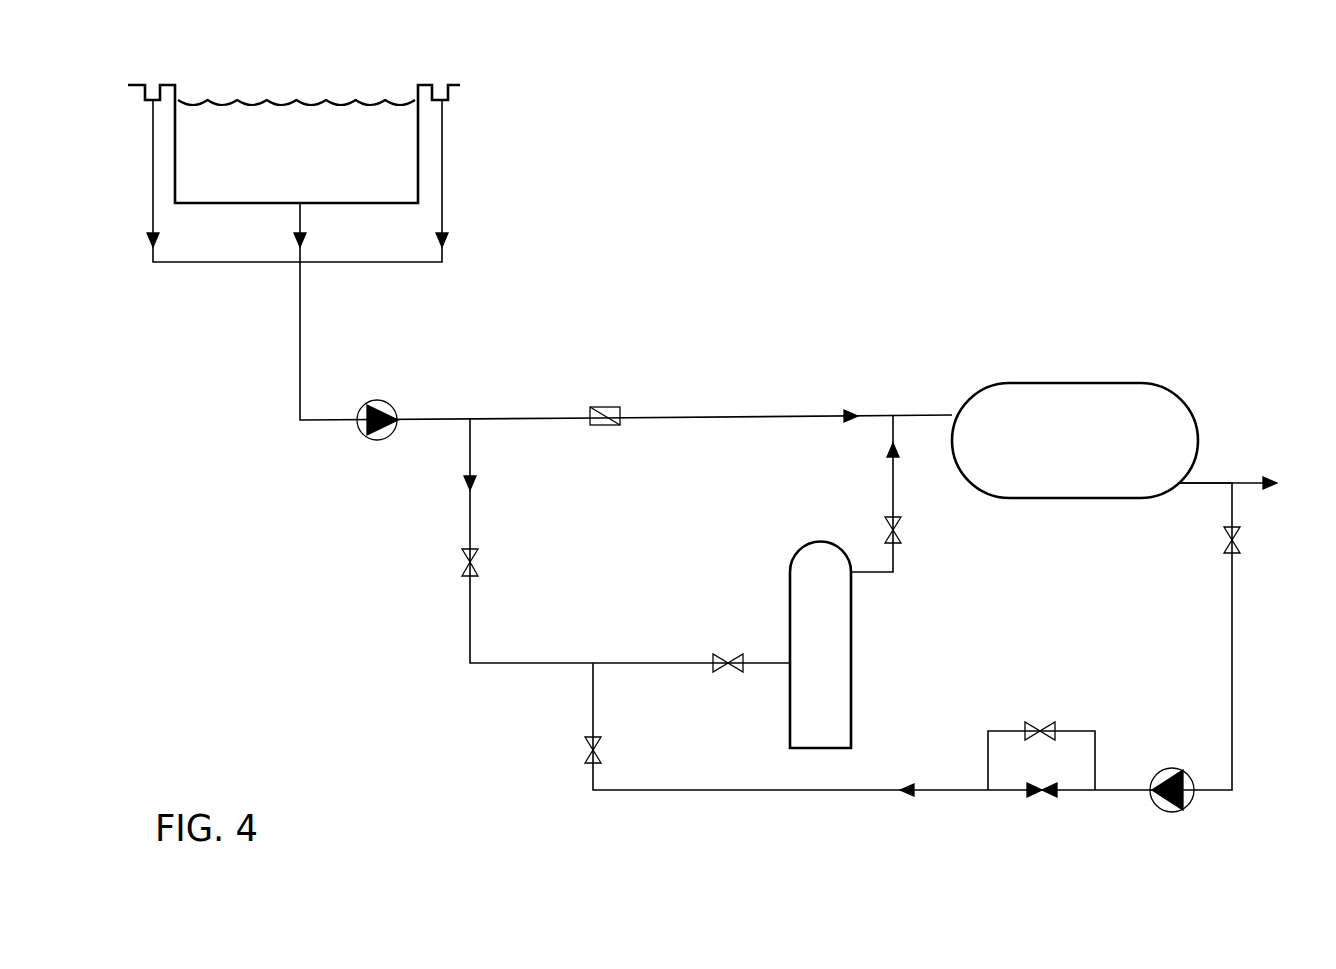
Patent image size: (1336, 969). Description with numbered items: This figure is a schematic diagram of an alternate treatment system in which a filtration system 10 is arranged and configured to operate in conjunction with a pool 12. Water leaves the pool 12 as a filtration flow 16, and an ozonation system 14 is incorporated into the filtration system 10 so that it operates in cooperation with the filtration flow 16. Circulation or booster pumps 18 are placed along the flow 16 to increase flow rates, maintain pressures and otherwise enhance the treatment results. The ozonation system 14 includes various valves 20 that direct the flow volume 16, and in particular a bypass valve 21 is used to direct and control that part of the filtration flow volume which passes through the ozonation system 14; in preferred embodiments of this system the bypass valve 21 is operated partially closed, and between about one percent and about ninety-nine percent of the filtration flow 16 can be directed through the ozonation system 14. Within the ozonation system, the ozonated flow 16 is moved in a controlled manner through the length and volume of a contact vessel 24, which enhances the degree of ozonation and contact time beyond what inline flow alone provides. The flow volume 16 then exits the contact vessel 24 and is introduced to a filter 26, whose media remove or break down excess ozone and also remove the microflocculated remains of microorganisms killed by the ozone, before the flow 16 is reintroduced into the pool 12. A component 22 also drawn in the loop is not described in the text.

The filtration system 10 is at (790, 244).
The pool 12 is at (249, 180).
The ozonation system 14 is at (883, 848).
The filtration flow 16 is at (303, 347).
The booster pump 18 is at (368, 438).
The valve 20 is at (478, 552).
The bypass valve 21 is at (608, 427).
The check valve 22 is at (1033, 798).
The contact vessel 24 is at (824, 638).
The filter 26 is at (1047, 466).